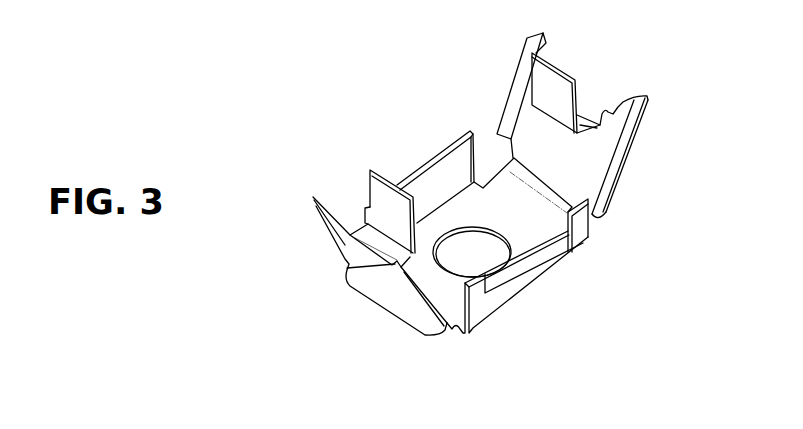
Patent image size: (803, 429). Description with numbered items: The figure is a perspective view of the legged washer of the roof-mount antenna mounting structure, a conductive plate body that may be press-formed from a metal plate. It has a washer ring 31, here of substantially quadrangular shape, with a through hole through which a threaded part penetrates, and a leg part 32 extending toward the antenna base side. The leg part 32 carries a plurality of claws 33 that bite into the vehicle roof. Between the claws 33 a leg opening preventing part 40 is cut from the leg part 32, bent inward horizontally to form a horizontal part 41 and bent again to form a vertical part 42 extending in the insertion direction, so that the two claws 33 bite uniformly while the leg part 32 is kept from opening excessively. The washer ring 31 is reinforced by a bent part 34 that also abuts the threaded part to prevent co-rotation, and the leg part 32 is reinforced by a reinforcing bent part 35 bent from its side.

The washer ring 31 is at (573, 248).
The leg part 32 is at (595, 170).
The claws 33 is at (637, 98).
The bent part 34 is at (433, 168).
The reinforcing bent part 35 is at (530, 53).
The leg opening preventing part 40 is at (544, 66).
The horizontal part 41 is at (604, 83).
The vertical part 42 is at (560, 56).